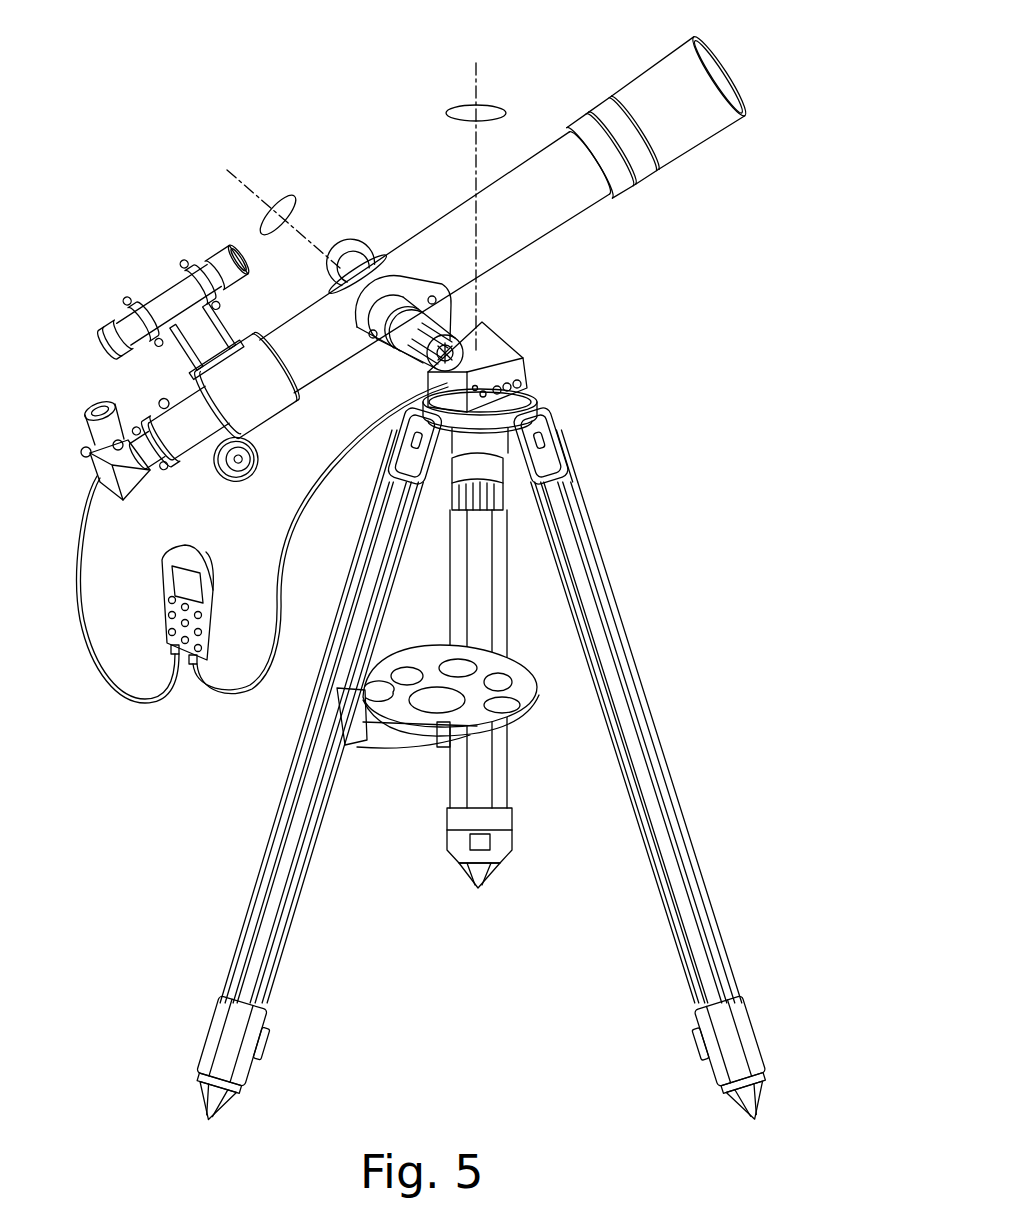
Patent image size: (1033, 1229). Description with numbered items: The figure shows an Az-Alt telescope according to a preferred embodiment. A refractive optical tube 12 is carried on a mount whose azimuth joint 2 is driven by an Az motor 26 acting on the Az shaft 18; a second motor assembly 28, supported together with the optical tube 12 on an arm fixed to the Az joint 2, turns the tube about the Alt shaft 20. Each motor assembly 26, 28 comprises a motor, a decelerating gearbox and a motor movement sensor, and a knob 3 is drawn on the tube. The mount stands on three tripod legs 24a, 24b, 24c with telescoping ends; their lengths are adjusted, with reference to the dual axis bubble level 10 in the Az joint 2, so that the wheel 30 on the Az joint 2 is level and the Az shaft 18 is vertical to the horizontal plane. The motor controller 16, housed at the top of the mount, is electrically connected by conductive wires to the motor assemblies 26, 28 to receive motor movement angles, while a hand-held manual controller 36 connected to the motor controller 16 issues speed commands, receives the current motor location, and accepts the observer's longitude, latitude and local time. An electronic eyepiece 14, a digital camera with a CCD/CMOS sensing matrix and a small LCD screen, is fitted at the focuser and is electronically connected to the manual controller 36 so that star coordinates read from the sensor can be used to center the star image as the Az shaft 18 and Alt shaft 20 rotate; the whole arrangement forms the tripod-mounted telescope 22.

The Az joint 2 is at (544, 384).
The knob 3 is at (352, 239).
The dual axis bubble level 10 is at (533, 393).
The optical tube 12 is at (543, 203).
The electronic eyepiece 14 is at (97, 432).
The motor controller 16 is at (495, 352).
The Az shaft 18 is at (477, 73).
The Alt shaft 20 is at (237, 173).
The tripod 22 is at (470, 767).
The tripod leg 24a is at (683, 900).
The tripod leg 24b is at (482, 780).
The tripod leg 24c is at (267, 920).
The Az motor 26 is at (488, 470).
The motor assembly 28 is at (403, 337).
The wheel 30 is at (530, 380).
The manual controller 36 is at (185, 555).